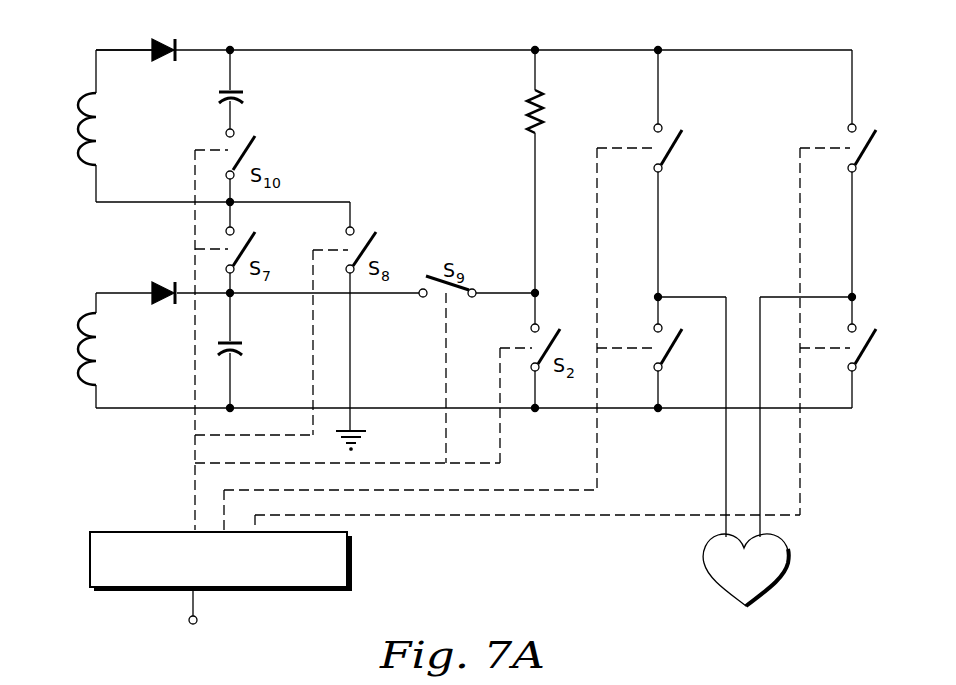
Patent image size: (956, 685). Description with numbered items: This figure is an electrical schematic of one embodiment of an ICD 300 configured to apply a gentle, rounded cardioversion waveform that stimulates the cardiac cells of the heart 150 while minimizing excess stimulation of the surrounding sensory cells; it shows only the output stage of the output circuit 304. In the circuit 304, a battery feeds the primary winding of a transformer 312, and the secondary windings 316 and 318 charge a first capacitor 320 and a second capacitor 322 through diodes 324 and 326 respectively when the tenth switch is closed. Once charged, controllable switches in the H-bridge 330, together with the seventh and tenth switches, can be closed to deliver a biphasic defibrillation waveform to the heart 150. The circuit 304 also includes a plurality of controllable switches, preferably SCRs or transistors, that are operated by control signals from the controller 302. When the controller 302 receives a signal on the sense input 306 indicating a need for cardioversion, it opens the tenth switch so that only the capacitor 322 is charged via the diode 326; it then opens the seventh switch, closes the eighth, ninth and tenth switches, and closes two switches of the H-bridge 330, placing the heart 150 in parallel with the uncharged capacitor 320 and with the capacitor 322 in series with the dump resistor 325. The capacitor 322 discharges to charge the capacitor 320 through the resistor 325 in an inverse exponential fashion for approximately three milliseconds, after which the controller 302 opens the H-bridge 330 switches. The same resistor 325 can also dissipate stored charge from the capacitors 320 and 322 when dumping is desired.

The transformer 312 is at (66, 78).
The diode 324 is at (153, 40).
The output circuit 304 is at (350, 42).
The first capacitor 320 is at (243, 91).
The secondary winding 316 is at (98, 121).
The dump resistor 325 is at (529, 92).
The H-bridge 330 is at (754, 40).
The diode 326 is at (152, 289).
The secondary winding 318 is at (97, 334).
The second capacitor 322 is at (236, 347).
The ICD 300 is at (150, 435).
The controller 302 is at (125, 531).
The sense input 306 is at (264, 610).
The heart 150 is at (790, 566).